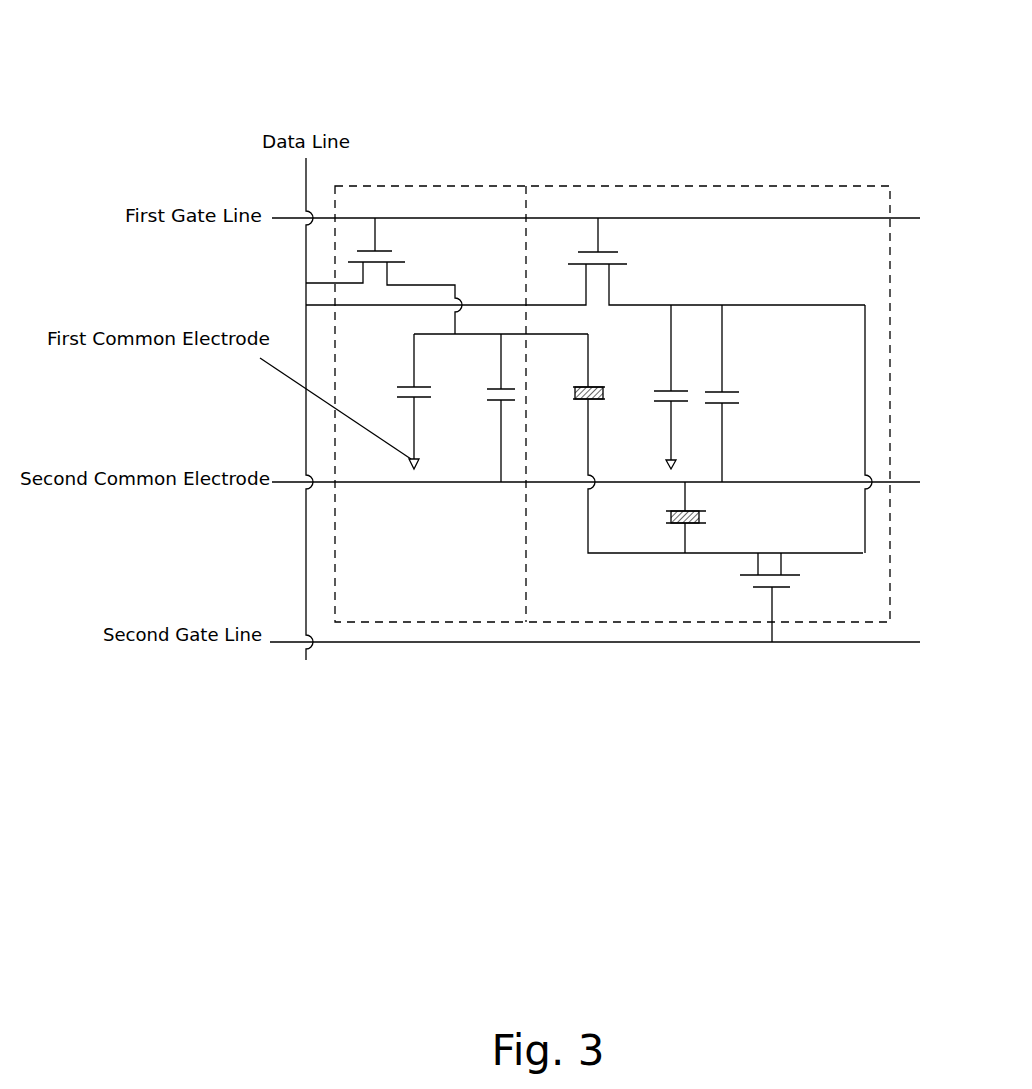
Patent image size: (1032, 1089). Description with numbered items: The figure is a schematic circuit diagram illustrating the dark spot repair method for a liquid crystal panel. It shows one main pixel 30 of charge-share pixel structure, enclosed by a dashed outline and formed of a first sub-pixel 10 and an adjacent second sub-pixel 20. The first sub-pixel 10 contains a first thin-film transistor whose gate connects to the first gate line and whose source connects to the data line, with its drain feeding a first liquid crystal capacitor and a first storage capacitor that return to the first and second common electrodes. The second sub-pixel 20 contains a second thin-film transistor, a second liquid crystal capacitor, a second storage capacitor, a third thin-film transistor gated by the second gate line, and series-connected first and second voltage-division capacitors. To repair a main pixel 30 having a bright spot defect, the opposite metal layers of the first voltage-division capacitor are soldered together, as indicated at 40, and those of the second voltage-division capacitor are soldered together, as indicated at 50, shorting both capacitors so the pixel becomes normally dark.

The first sub-pixel 10 is at (430, 186).
The second sub-pixel 20 is at (683, 186).
The main pixel 30 is at (442, 75).
The soldered connection of first voltage-division capacitor 40 is at (594, 387).
The soldered connection of second voltage-division capacitor 50 is at (701, 516).